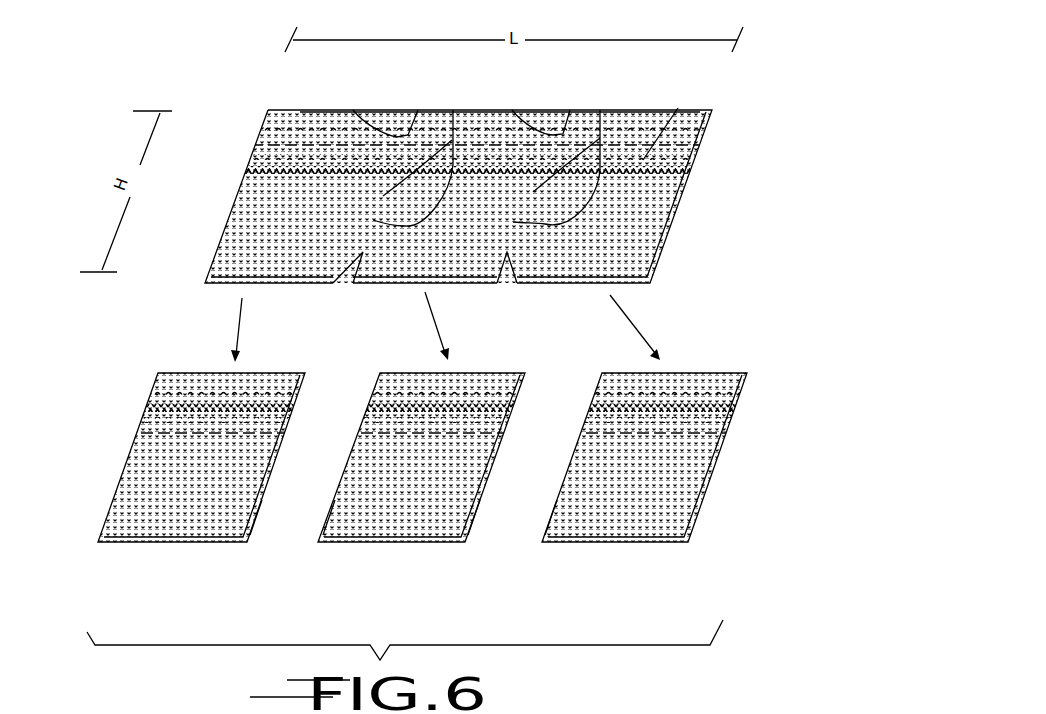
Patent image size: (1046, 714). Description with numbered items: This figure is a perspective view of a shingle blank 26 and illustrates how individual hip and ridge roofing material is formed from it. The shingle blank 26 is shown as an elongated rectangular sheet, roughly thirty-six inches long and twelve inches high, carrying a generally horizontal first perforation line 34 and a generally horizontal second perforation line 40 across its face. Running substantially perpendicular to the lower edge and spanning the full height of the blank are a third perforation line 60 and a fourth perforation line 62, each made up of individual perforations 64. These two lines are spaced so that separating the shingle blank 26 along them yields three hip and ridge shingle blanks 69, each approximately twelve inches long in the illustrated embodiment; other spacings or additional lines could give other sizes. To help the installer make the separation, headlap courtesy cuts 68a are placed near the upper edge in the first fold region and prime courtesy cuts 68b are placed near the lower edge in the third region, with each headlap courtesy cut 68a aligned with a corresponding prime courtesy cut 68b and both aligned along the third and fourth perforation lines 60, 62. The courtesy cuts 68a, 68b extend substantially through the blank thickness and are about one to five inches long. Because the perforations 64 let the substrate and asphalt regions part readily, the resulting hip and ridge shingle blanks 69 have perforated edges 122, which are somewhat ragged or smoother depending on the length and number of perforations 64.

The shingle blank 26 is at (250, 136).
The first perforation line 34 is at (678, 108).
The second perforation line 40 is at (310, 127).
The third perforation line 60 is at (355, 117).
The fourth perforation line 62 is at (512, 110).
The perforations 64 is at (453, 110).
The headlap courtesy cuts 68a is at (393, 118).
The prime courtesy cuts 68b is at (343, 272).
The hip and ridge shingle blanks 69 is at (183, 555).
The perforated edges 122 is at (328, 513).